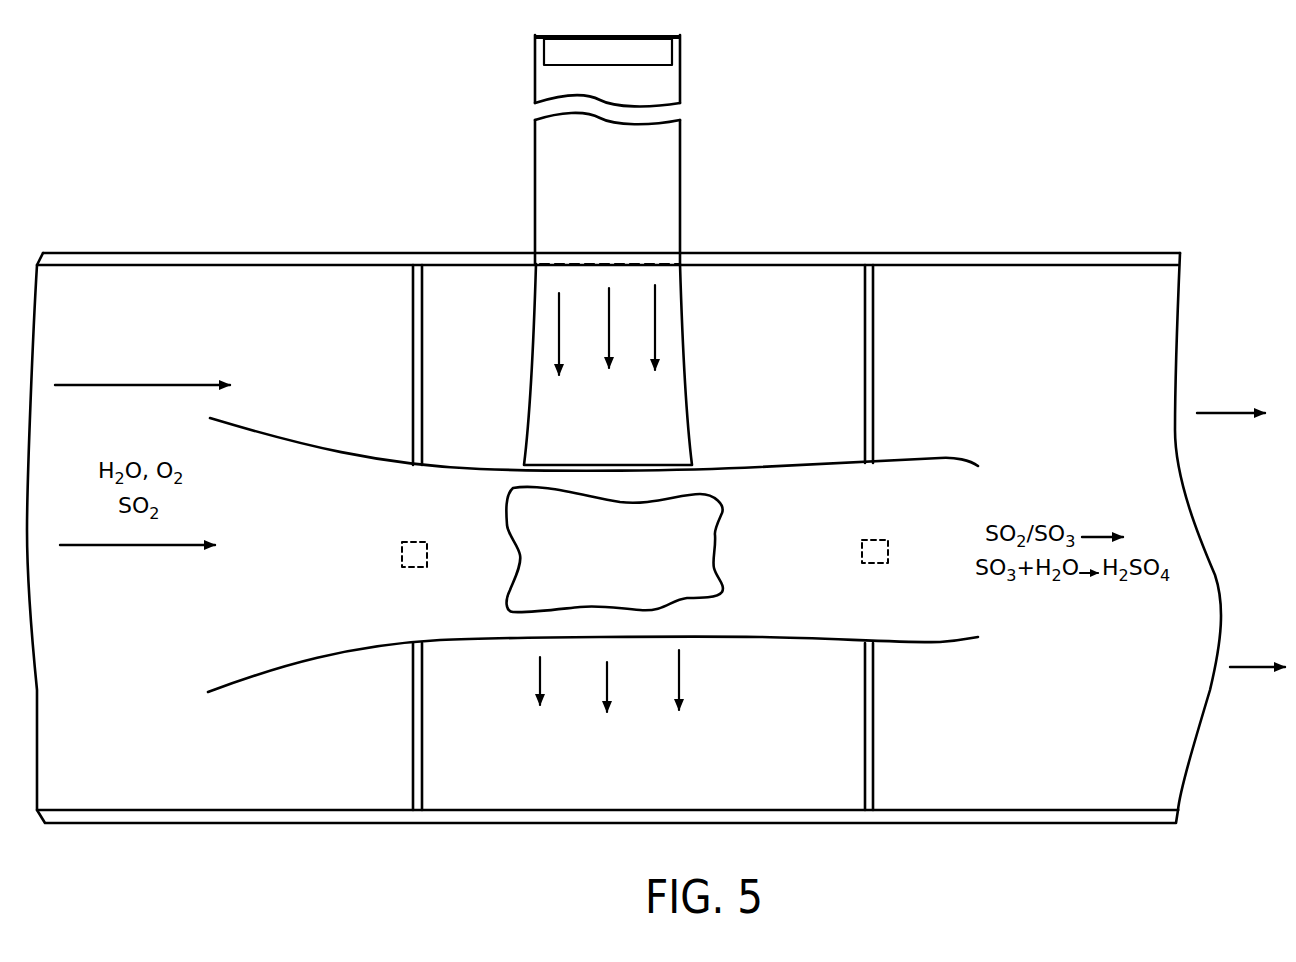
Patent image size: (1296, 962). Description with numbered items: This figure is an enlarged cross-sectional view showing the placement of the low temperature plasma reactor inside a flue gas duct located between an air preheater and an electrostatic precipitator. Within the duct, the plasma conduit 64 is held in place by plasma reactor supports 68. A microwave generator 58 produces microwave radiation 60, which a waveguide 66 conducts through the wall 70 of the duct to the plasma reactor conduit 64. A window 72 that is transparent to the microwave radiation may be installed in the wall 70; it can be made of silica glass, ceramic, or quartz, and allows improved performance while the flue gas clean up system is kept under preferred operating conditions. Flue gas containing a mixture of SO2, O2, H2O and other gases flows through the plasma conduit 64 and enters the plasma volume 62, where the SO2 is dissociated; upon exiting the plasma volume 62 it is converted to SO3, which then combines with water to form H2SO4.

The microwave generator 58 is at (655, 50).
The microwave radiation 60 is at (625, 429).
The plasma volume 62 is at (542, 577).
The plasma conduit 64 is at (793, 465).
The waveguide 66 is at (680, 147).
The plasma reactor supports 68 is at (420, 305).
The wall 70 is at (832, 260).
The window 72 is at (658, 258).